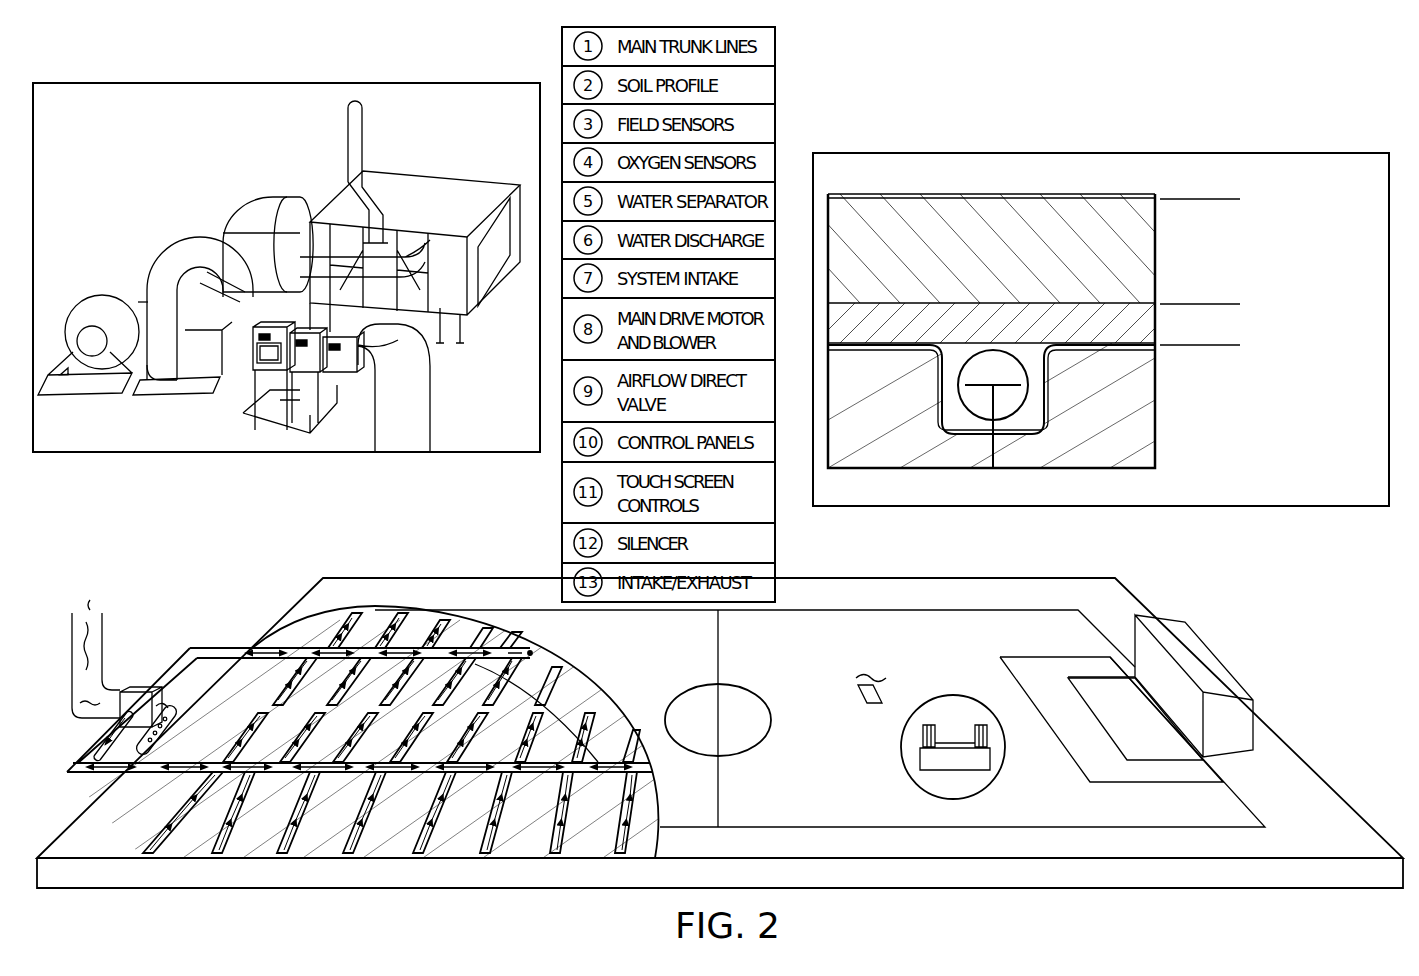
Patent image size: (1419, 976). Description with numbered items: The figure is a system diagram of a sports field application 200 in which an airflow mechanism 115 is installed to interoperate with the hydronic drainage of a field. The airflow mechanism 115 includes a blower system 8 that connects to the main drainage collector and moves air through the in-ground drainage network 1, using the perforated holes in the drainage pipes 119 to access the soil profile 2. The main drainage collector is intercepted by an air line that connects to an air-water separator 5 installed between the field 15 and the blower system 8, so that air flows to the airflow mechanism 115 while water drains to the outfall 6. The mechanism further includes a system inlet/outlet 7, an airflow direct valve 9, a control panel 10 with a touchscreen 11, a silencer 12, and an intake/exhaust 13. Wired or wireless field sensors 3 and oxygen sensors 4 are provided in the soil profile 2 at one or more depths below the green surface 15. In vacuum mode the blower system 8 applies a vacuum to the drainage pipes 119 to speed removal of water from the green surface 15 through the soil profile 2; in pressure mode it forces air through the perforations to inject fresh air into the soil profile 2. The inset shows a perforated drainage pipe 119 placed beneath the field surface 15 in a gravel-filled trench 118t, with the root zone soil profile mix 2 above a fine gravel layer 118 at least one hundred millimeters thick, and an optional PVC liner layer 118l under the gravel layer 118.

The drainage network 1 is at (496, 740).
The soil profile 2 is at (977, 437).
The field sensors 3 is at (952, 747).
The oxygen sensors 4 is at (865, 701).
The air-water separator 5 is at (128, 709).
The outfall 6 is at (167, 722).
The system inlet/outlet 7 is at (92, 605).
The blower system 8 is at (145, 341).
The airflow direct valve 9 is at (193, 316).
The control panel 10 is at (303, 377).
The touchscreen 11 is at (277, 337).
The silencer 12 is at (268, 244).
The intake/exhaust 13 is at (410, 222).
The green surface 15 is at (968, 194).
The airflow mechanism 115 is at (168, 184).
The gravel layer 118 is at (1146, 312).
The PVC liner layer 118l is at (1166, 356).
The gravel-filled trench 118t is at (1049, 426).
The perforated drainage pipe 119 is at (1014, 378).
The sports field application 200 is at (1276, 99).